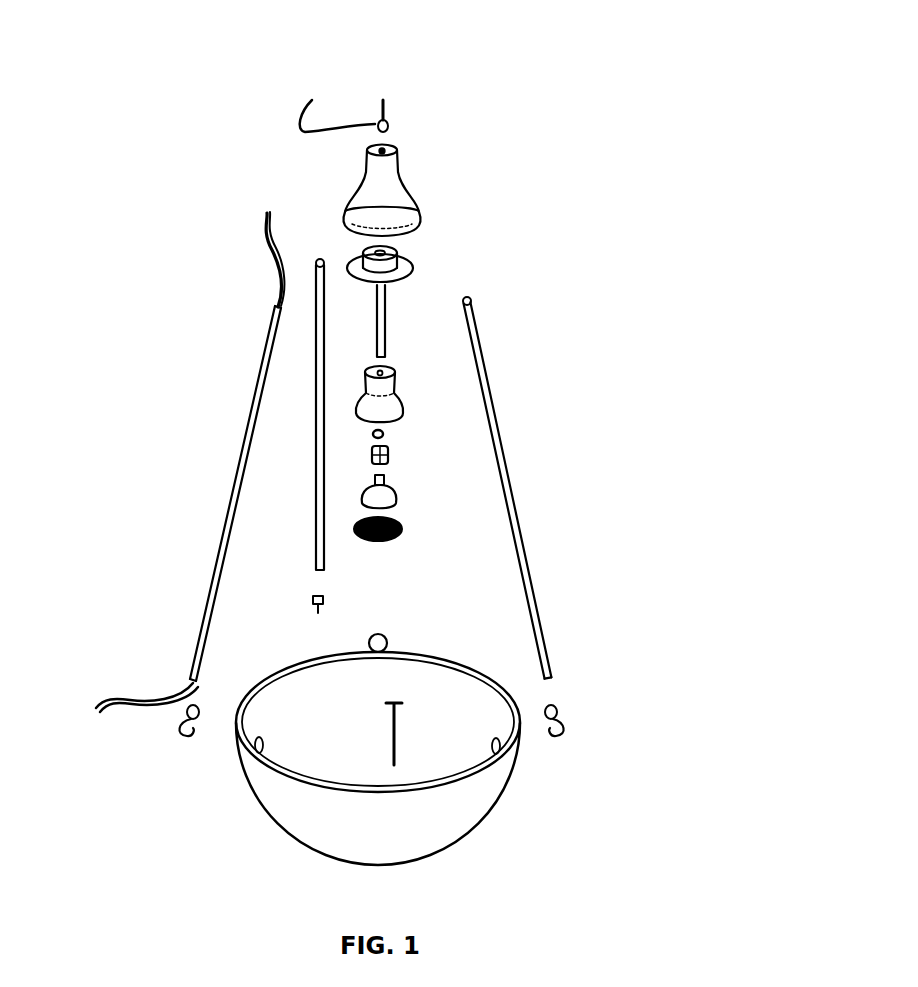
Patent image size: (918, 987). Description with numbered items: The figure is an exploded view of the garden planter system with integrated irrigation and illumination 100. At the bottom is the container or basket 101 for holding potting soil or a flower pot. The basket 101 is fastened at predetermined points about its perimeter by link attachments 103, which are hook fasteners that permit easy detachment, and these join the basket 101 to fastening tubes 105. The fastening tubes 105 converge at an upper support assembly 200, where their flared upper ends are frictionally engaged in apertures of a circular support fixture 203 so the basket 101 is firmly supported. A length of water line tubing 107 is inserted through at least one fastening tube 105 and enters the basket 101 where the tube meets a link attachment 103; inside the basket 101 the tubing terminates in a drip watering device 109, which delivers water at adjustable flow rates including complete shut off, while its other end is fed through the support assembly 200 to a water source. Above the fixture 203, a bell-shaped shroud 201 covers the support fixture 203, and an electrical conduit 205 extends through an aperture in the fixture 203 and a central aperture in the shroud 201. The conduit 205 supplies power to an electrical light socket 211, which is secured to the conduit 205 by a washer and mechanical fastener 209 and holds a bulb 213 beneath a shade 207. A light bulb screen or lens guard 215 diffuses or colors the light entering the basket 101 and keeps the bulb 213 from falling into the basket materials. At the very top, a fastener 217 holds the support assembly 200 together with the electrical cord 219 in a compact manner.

The garden planter system with integrated irrigation and illumination 100 is at (610, 853).
The container or basket 101 is at (472, 796).
The link attachment 103 is at (553, 708).
The fastening tube 105 is at (515, 510).
The water line tubing 107 is at (140, 698).
The drip watering device 109 is at (400, 705).
The support assembly 200 is at (570, 192).
The bell-shaped shroud 201 is at (407, 190).
The circular support fixture 203 is at (413, 270).
The electrical conduit 205 is at (388, 330).
The shade 207 is at (386, 405).
The washer and mechanical fastener 209 is at (385, 434).
The electrical light socket 211 is at (388, 457).
The bulb 213 is at (393, 493).
The light bulb screen or lens guard 215 is at (373, 547).
The fastener 217 is at (326, 90).
The electrical cord 219 is at (385, 100).